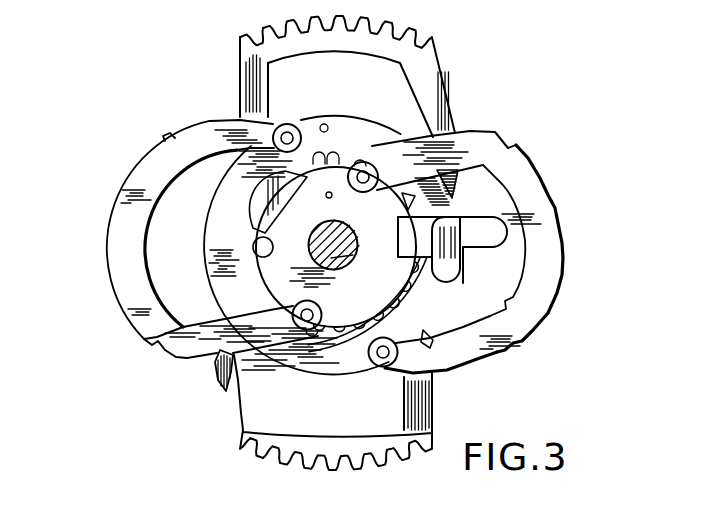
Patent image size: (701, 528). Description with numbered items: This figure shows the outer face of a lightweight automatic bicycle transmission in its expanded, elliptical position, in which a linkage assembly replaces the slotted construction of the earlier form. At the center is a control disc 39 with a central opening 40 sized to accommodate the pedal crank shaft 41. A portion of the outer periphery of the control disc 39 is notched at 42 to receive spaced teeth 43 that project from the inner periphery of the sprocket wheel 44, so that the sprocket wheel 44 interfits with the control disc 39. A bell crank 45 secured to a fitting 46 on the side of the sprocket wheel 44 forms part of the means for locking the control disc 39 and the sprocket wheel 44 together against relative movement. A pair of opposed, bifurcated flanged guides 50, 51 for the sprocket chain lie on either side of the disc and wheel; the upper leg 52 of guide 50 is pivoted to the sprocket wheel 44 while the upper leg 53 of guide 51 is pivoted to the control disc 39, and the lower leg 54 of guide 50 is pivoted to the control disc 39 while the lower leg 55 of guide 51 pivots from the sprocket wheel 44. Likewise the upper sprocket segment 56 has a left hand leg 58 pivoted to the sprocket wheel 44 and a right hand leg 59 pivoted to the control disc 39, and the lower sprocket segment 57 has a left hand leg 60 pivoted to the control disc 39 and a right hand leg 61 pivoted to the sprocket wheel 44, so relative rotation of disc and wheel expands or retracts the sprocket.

The control disc 39 is at (337, 249).
The central opening 40 is at (349, 241).
The pedal crank shaft 41 is at (342, 257).
The notch 42 is at (437, 325).
The teeth 43 is at (400, 195).
The sprocket wheel 44 is at (302, 245).
The bell crank 45 is at (498, 231).
The fitting 46 is at (420, 230).
The flanged guide 50 is at (107, 285).
The flanged guide 51 is at (565, 258).
The upper leg 52 is at (215, 124).
The upper leg 53 is at (450, 158).
The lower leg 54 is at (250, 338).
The lower leg 55 is at (462, 368).
The upper sprocket segment 56 is at (432, 40).
The lower sprocket segment 57 is at (401, 462).
The left hand leg 58 is at (452, 110).
The right hand leg 59 is at (248, 75).
The left hand leg 60 is at (429, 403).
The right hand leg 61 is at (223, 393).